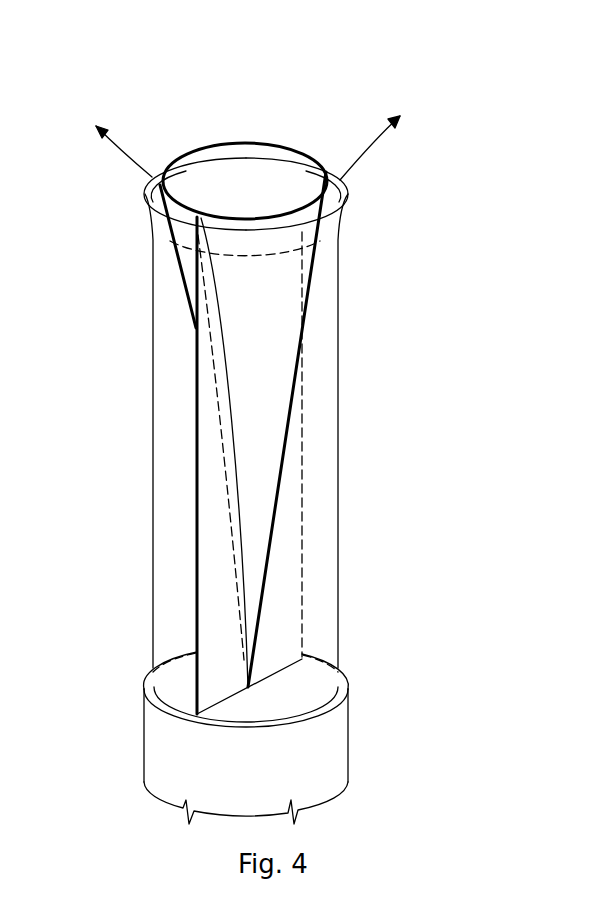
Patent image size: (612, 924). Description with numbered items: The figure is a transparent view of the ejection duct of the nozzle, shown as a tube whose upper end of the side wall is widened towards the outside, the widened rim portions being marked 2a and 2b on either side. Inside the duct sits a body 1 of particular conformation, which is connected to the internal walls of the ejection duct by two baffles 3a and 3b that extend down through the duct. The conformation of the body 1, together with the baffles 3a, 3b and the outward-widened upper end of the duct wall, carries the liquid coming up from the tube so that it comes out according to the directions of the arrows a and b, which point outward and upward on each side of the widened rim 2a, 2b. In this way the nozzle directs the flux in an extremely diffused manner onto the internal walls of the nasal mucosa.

The body 1 is at (235, 162).
The left rim flange 2a is at (158, 173).
The right rim flange 2b is at (333, 193).
The baffle 3a is at (207, 431).
The baffle 3b is at (295, 470).
The arrow a is at (112, 141).
The arrow b is at (382, 142).